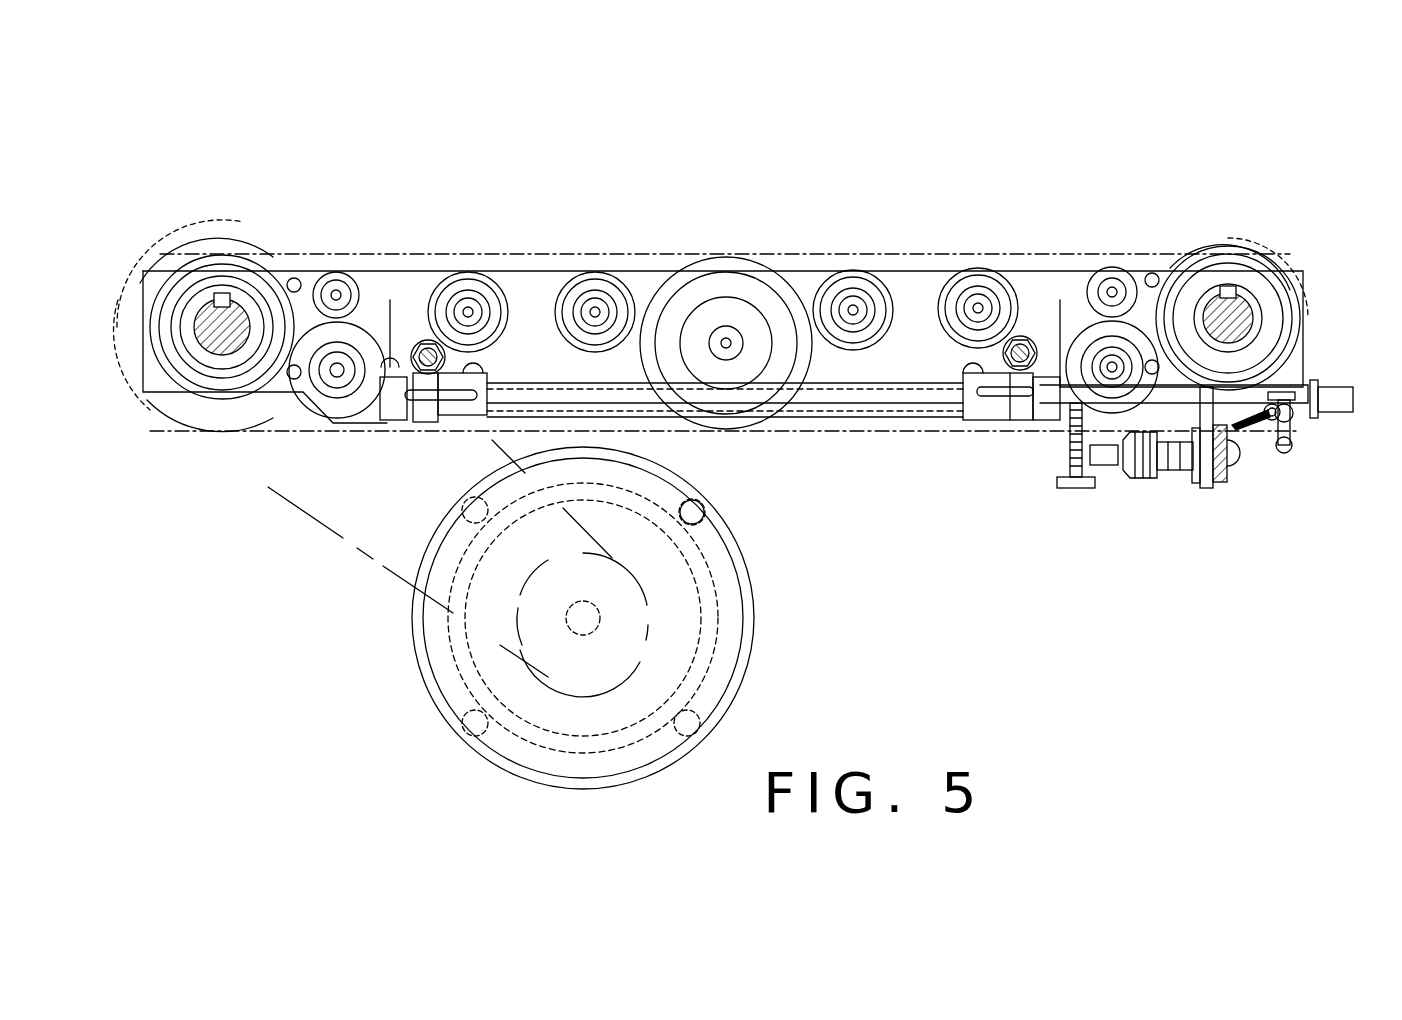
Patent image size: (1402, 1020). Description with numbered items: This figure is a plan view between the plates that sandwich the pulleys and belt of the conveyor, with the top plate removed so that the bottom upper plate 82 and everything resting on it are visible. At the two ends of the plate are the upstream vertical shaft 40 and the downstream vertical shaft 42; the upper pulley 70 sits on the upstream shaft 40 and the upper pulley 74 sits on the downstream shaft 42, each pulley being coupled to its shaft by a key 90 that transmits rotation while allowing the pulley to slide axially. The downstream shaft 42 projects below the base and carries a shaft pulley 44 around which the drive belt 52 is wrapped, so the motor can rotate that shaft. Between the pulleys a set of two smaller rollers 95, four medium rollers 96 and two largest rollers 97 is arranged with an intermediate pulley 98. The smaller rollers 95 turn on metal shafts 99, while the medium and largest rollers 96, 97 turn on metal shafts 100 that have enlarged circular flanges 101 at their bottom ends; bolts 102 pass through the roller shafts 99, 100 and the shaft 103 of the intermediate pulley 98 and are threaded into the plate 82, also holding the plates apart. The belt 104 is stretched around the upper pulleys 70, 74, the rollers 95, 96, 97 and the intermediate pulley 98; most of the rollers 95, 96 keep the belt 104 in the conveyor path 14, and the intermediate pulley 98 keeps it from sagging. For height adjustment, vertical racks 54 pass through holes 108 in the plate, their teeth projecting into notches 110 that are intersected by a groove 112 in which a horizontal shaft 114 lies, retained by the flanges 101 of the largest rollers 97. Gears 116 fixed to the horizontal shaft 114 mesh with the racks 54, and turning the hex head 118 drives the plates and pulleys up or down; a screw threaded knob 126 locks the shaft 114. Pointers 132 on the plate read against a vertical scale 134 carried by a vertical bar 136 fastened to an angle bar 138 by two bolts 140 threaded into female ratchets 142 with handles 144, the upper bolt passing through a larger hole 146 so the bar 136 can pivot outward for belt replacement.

The conveyor path 14 is at (522, 155).
The upstream vertical shaft 40 is at (1262, 298).
The downstream vertical shaft 42 is at (175, 333).
The shaft pulley 44 is at (170, 250).
The drive belt 52 is at (298, 503).
The vertical racks 54 is at (385, 330).
The upper pulley 70 is at (1228, 268).
The upper pulley 74 is at (233, 268).
The bottom upper plate 82 is at (928, 300).
The key 90 is at (214, 295).
The smaller rollers 95 is at (338, 288).
The medium rollers 96 is at (500, 300).
The largest rollers 97 is at (300, 405).
The intermediate pulley 98 is at (795, 295).
The metal shafts 99 is at (345, 283).
The metal shafts 100 is at (462, 300).
The circular flanges 101 is at (527, 258).
The bolts 102 is at (330, 292).
The shaft 103 is at (757, 300).
The belt 104 is at (680, 258).
The holes 108 is at (425, 338).
The notches 110 is at (462, 420).
The groove 112 is at (375, 420).
The horizontal shaft 114 is at (350, 412).
The gears 116 is at (428, 423).
The hex head 118 is at (1332, 380).
The screw threaded knob 126 is at (1076, 488).
The pointers 132 is at (1252, 428).
The vertical scale 134 is at (1202, 485).
The vertical bar 136 is at (1222, 485).
The angle bar 138 is at (1208, 490).
The bolts 140 is at (1238, 458).
The female ratchets 142 is at (1150, 480).
The handles 144 is at (1104, 466).
The larger hole 146 is at (1205, 488).